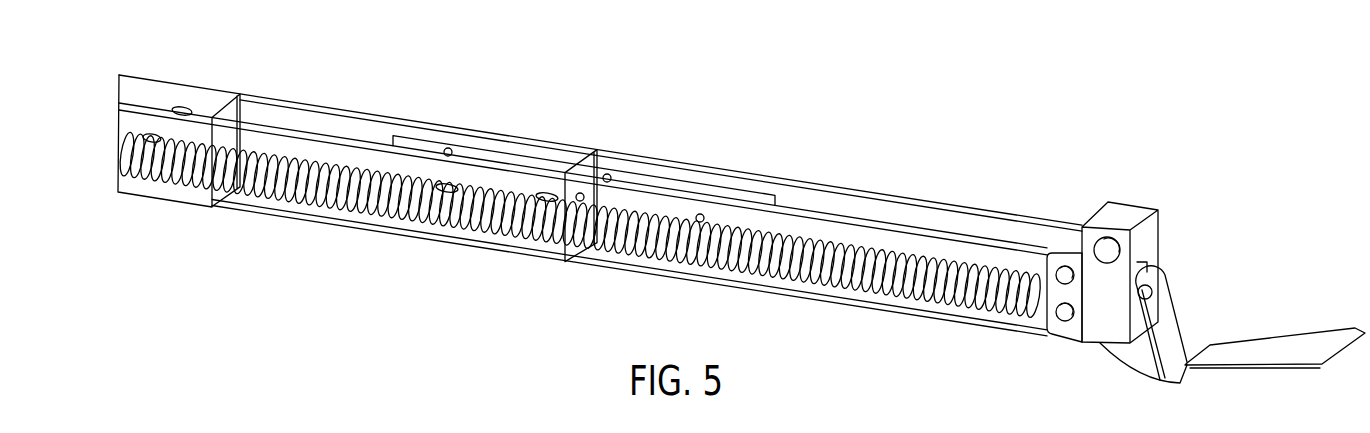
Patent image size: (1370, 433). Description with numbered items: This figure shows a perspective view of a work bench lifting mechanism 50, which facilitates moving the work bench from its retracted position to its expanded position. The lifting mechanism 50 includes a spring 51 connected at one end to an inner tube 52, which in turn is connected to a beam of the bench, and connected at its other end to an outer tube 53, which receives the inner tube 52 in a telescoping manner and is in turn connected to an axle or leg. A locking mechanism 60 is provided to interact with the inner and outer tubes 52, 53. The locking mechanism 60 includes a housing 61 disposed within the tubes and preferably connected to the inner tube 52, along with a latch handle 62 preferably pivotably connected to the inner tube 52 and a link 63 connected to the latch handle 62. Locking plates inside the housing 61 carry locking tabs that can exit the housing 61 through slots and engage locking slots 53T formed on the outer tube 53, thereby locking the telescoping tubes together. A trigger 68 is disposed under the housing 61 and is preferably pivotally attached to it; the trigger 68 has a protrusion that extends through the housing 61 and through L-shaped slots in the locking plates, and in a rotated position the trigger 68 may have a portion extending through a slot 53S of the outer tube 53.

The lifting mechanism 50 is at (596, 95).
The spring 51 is at (790, 273).
The inner tube 52 is at (923, 217).
The outer tube 53 is at (168, 93).
The slot 53S is at (447, 186).
The locking slots 53T is at (550, 191).
The locking mechanism 60 is at (482, 207).
The housing 61 is at (672, 187).
The latch handle 62 is at (1183, 373).
The link 63 is at (913, 260).
The trigger 68 is at (435, 203).